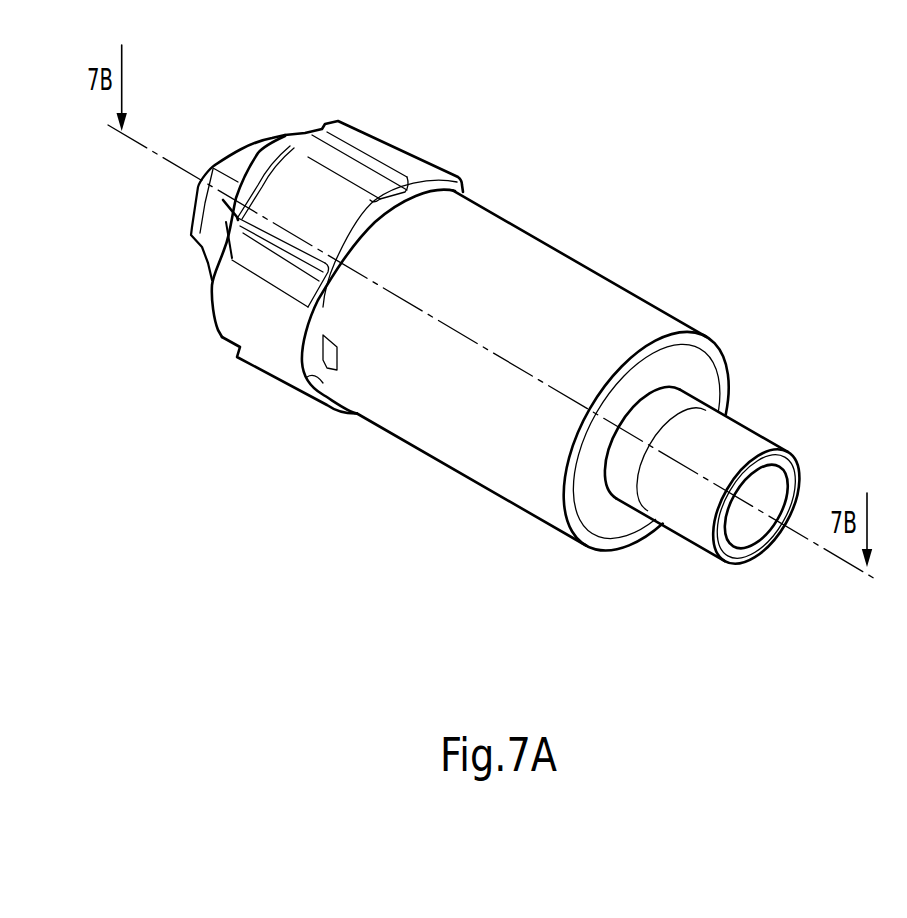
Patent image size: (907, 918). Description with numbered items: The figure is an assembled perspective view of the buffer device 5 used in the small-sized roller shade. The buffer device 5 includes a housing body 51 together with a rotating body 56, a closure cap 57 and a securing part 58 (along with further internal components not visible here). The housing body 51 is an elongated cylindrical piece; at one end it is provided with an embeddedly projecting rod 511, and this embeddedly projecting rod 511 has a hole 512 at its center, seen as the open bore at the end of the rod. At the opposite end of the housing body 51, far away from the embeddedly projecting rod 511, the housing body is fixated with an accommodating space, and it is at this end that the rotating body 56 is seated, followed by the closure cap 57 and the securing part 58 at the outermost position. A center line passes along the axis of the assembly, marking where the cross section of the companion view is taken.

The buffer device 5 is at (560, 196).
The housing body 51 is at (628, 276).
The embeddedly projecting rod 511 is at (737, 440).
The hole 512 is at (745, 530).
The rotating body 56 is at (431, 144).
The closure cap 57 is at (291, 124).
The securing part 58 is at (196, 158).